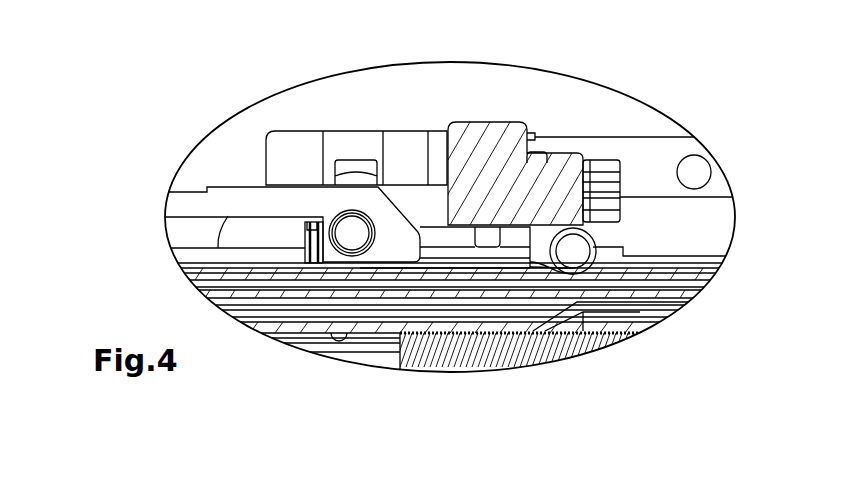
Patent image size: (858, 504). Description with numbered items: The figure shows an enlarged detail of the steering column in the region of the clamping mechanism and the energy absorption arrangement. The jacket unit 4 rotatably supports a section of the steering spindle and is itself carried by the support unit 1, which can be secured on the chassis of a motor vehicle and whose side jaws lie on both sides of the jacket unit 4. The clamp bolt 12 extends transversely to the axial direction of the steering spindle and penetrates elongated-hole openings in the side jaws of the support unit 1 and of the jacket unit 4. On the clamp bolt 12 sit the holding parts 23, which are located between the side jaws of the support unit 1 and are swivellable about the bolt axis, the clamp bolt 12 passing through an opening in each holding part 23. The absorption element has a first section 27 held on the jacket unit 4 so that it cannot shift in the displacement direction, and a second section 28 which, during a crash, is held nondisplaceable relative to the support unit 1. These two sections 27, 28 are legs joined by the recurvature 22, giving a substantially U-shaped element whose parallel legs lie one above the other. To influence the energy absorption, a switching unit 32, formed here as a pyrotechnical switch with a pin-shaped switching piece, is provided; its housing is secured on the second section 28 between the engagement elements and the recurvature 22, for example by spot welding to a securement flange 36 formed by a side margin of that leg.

The support unit 1 is at (676, 126).
The jacket unit 4 is at (690, 276).
The clamp bolt 12 is at (352, 233).
The recurvature 22 is at (563, 251).
The holding part 23 is at (314, 242).
The first section of absorption element 27 is at (517, 352).
The second section of absorption element 28 is at (445, 247).
The switching unit 32 is at (520, 173).
The securement flange 36 is at (601, 191).